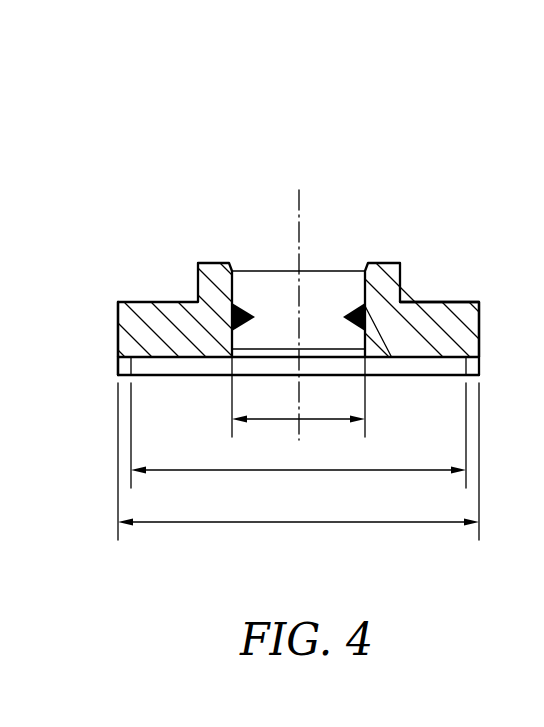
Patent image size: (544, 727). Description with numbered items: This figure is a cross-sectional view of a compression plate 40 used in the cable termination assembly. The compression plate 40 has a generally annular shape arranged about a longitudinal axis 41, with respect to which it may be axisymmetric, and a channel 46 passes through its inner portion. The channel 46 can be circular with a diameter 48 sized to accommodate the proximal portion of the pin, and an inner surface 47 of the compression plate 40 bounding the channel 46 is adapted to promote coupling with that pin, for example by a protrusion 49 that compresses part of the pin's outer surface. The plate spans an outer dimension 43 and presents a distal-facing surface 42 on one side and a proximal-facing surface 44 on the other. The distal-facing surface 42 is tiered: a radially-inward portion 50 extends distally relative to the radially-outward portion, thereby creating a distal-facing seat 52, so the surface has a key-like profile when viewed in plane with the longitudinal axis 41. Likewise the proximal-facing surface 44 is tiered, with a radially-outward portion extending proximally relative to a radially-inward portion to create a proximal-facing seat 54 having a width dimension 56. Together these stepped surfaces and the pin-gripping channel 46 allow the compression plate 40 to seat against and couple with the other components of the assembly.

The compression plate 40 is at (427, 87).
The longitudinal axis 41 is at (300, 208).
The distal-facing surface 42 is at (228, 290).
The outer dimension 43 is at (337, 523).
The proximal-facing surface 44 is at (121, 378).
The channel 46 is at (315, 252).
The inner surface 47 is at (233, 287).
The diameter 48 is at (337, 420).
The protrusion 49 is at (361, 306).
The radially-inward portion 50 is at (378, 266).
The distal-facing seat 52 is at (460, 301).
The proximal-facing seat 54 is at (434, 361).
The width dimension 56 is at (337, 471).